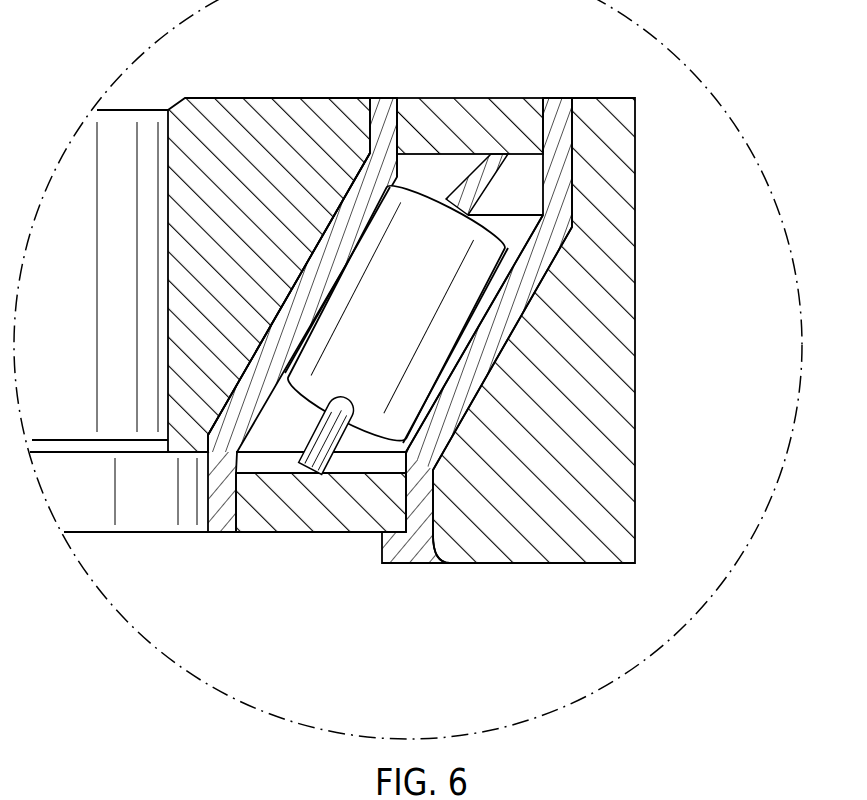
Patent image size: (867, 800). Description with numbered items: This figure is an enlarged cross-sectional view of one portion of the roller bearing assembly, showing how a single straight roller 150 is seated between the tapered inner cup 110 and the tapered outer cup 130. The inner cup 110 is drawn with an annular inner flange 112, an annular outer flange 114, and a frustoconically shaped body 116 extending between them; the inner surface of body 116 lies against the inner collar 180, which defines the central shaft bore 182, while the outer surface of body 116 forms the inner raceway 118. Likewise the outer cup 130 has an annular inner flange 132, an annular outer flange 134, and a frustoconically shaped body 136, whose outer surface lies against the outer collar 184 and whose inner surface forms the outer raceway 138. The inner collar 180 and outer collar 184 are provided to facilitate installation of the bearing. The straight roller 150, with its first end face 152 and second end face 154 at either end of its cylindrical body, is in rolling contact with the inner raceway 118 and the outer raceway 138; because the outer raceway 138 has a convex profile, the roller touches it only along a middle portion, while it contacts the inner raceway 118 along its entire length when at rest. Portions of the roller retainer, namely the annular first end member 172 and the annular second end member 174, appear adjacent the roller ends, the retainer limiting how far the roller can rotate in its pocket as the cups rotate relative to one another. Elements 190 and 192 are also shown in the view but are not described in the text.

The tapered inner cup 110 is at (282, 289).
The annular inner flange 112 is at (207, 498).
The annular outer flange 114 is at (367, 127).
The frustoconically shaped body 116 is at (292, 327).
The inner raceway 118 is at (340, 273).
The tapered outer cup 130 is at (568, 270).
The annular inner flange 132 is at (405, 503).
The annular outer flange 134 is at (573, 140).
The frustoconically shaped body 136 is at (507, 293).
The outer raceway 138 is at (458, 346).
The straight roller 150 is at (415, 307).
The first end face 152 is at (305, 388).
The second end face 154 is at (505, 245).
The annular first end member 172 is at (337, 468).
The annular second end member 174 is at (457, 177).
The inner collar 180 is at (228, 97).
The central shaft bore 182 is at (123, 148).
The outer collar 184 is at (533, 563).
The base portion 190 is at (258, 532).
The insert 192 is at (477, 98).